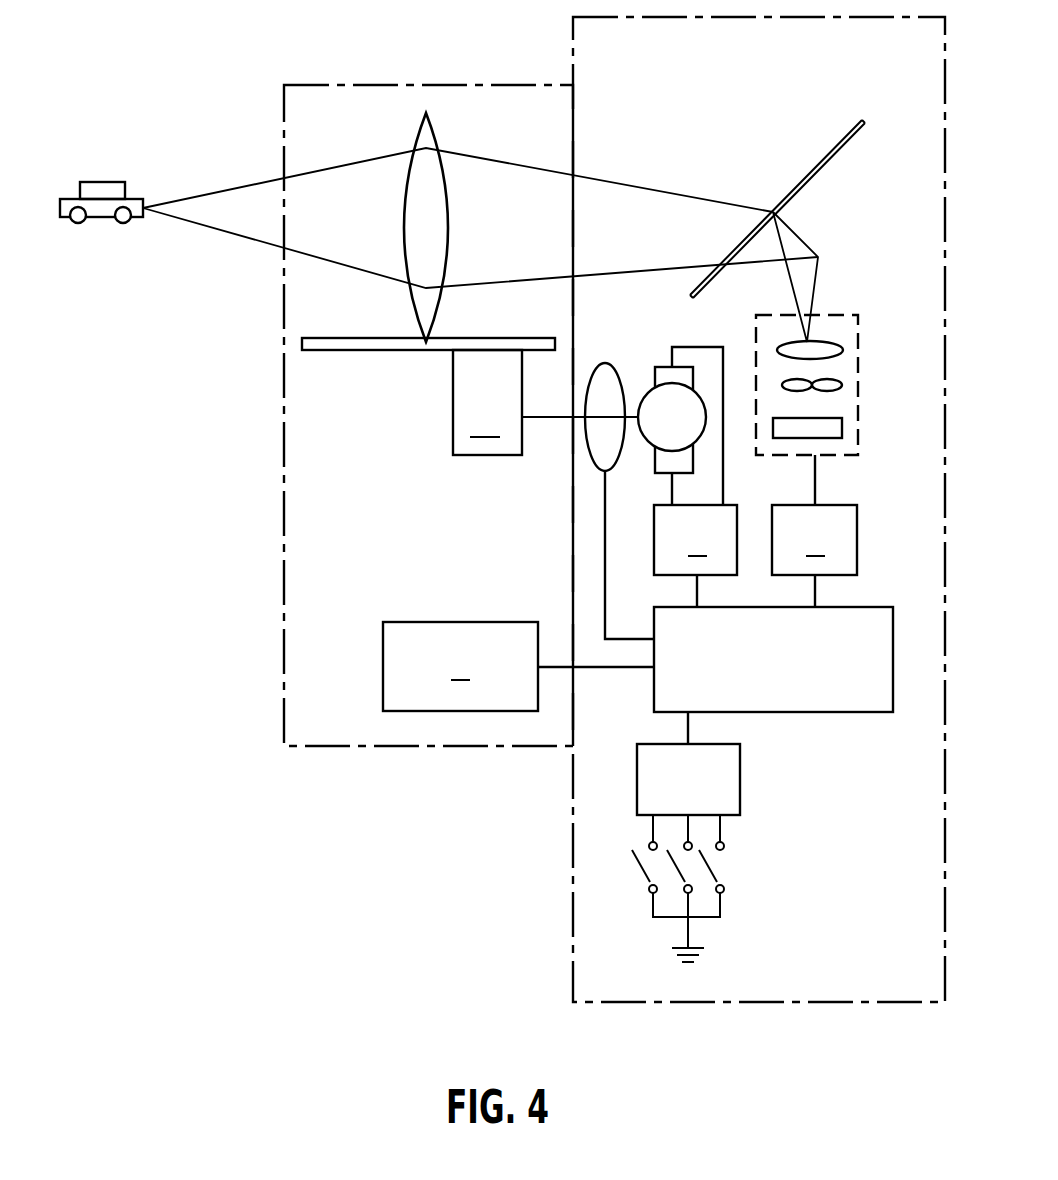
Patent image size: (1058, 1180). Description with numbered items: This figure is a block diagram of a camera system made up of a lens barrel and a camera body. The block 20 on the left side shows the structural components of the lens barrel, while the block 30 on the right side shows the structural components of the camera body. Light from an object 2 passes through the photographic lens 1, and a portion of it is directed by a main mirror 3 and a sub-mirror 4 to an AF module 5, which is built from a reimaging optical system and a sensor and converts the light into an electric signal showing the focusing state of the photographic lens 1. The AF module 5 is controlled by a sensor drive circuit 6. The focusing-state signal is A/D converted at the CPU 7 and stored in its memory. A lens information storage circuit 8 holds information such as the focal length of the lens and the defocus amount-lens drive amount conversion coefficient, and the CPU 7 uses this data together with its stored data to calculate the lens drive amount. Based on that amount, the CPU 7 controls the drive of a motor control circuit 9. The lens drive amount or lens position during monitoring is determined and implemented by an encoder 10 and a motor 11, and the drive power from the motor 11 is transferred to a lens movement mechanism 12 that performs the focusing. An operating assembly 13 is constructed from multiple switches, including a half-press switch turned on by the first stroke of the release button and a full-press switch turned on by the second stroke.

The photographic lens 1 is at (437, 128).
The object 2 is at (106, 182).
The main mirror 3 is at (812, 165).
The sub-mirror 4 is at (806, 238).
The AF module 5 is at (860, 357).
The sensor drive circuit 6 is at (814, 531).
The CPU 7 is at (773, 659).
The lens information storage circuit 8 is at (518, 666).
The motor control circuit 9 is at (695, 556).
The encoder 10 is at (588, 457).
The motor 11 is at (660, 368).
The lens movement mechanism 12 is at (470, 396).
The operating assembly 13 is at (686, 837).
The lens barrel block 20 is at (410, 746).
The camera body block 30 is at (774, 1004).